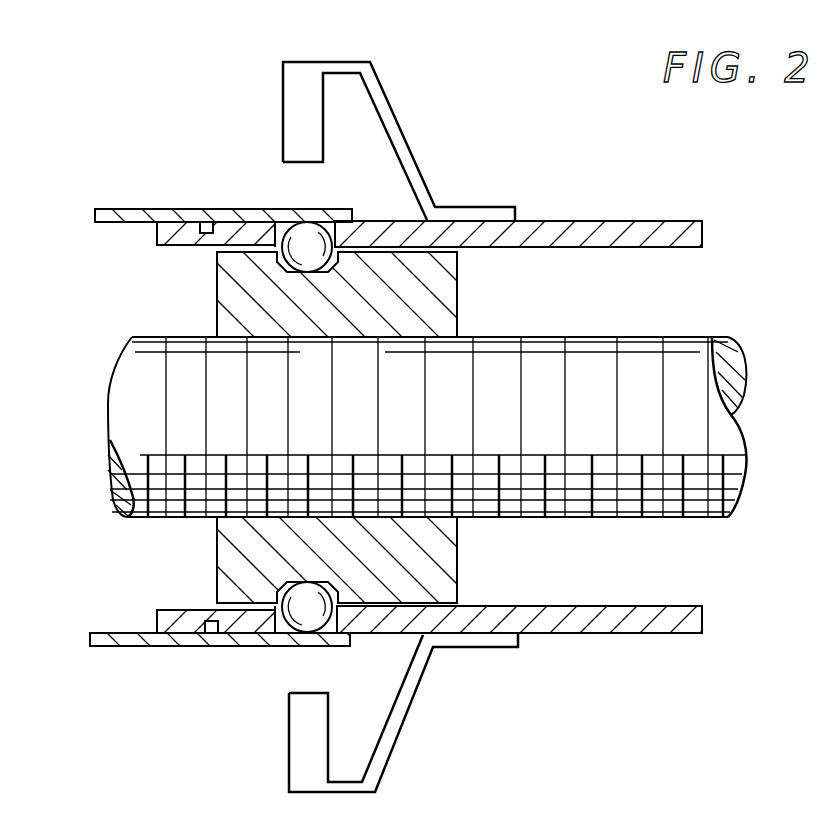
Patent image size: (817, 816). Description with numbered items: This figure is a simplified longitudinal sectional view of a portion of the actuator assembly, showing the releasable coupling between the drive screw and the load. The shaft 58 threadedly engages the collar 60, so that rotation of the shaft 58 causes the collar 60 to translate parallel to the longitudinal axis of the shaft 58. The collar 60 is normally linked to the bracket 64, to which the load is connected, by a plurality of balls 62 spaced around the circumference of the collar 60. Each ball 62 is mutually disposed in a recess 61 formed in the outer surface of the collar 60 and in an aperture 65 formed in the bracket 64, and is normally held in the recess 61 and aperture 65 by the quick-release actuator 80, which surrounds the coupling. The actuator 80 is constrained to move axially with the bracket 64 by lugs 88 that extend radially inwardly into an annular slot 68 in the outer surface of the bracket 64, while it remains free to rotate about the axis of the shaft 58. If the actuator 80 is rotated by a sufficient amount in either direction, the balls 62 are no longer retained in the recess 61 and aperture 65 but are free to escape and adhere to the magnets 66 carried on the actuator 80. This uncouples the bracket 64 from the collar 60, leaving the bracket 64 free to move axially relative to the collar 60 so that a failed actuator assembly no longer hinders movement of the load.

The shaft 58 is at (657, 510).
The collar 60 is at (447, 287).
The recess 61 is at (318, 240).
The ball 62 is at (302, 242).
The bracket 64 is at (588, 606).
The aperture 65 is at (322, 630).
The magnet 66 is at (288, 117).
The annular slot 68 is at (208, 237).
The quick-release actuator 80 is at (108, 209).
The lug 88 is at (210, 632).